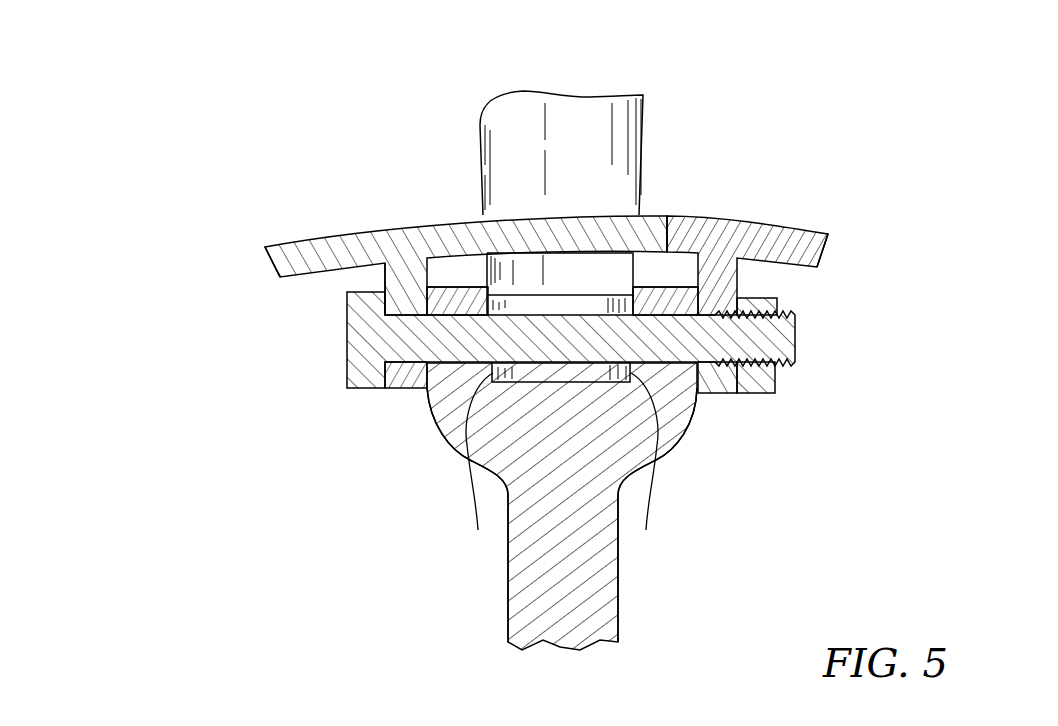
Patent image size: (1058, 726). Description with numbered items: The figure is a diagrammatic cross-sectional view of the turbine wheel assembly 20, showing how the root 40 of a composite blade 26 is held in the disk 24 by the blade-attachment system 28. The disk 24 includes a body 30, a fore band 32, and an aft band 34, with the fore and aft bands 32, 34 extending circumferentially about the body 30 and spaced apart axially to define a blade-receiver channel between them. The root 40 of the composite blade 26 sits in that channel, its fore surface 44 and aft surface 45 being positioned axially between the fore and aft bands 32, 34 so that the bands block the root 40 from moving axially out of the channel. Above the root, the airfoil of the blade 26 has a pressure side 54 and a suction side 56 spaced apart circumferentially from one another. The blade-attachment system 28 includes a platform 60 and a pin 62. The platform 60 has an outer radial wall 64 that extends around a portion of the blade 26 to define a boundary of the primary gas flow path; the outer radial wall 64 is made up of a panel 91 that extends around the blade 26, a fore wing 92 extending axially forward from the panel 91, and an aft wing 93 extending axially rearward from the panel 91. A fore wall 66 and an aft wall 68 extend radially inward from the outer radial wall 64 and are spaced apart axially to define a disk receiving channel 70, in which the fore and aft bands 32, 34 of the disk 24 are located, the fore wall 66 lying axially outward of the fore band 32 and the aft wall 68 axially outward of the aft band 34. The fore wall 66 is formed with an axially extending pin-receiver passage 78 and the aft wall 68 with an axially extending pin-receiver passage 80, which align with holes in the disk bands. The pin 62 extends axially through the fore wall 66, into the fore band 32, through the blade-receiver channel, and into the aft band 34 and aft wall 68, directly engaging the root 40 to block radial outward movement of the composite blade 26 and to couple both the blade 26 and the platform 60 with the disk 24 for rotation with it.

The turbine wheel assembly 20 is at (196, 84).
The disk 24 is at (677, 579).
The composite blade 26 is at (635, 41).
The blade-attachment system 28 is at (257, 153).
The body 30 is at (619, 612).
The fore band 32 is at (440, 383).
The aft band 34 is at (673, 383).
The root 40 is at (634, 577).
The fore surface 44 is at (480, 465).
The aft surface 45 is at (644, 465).
The pressure side 54 is at (483, 166).
The suction side 56 is at (643, 148).
The platform 60 is at (320, 222).
The pin 62 is at (347, 340).
The outer radial wall 64 is at (688, 200).
The fore wall 66 is at (347, 291).
The aft wall 68 is at (738, 280).
The disk receiving channel 70 is at (442, 273).
The pin-receiver passage 78 is at (398, 388).
The pin-receiver passage 80 is at (713, 367).
The panel 91 is at (733, 218).
The fore wing 92 is at (273, 265).
The aft wing 93 is at (832, 251).